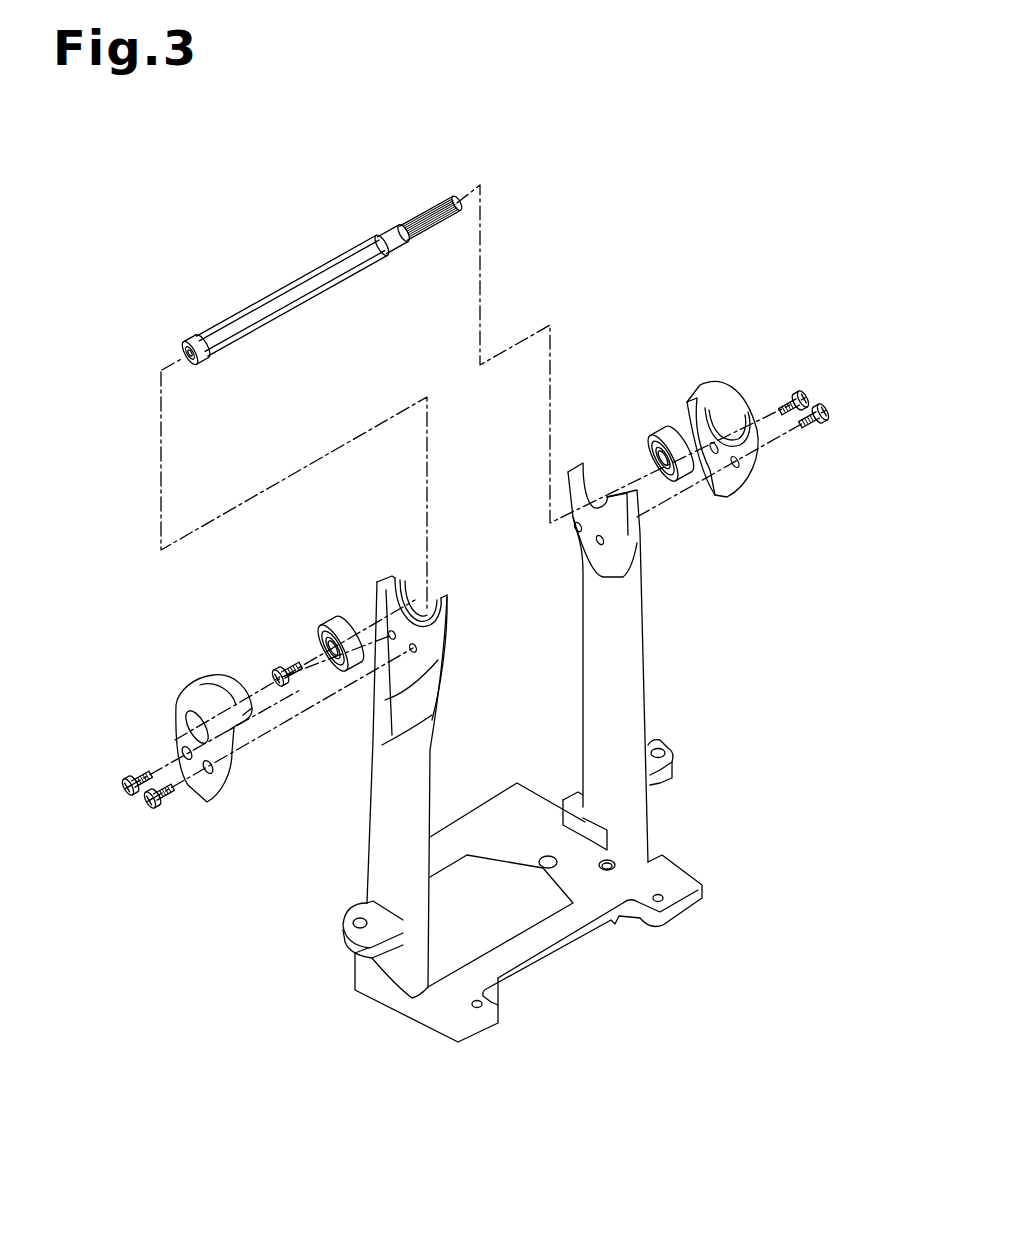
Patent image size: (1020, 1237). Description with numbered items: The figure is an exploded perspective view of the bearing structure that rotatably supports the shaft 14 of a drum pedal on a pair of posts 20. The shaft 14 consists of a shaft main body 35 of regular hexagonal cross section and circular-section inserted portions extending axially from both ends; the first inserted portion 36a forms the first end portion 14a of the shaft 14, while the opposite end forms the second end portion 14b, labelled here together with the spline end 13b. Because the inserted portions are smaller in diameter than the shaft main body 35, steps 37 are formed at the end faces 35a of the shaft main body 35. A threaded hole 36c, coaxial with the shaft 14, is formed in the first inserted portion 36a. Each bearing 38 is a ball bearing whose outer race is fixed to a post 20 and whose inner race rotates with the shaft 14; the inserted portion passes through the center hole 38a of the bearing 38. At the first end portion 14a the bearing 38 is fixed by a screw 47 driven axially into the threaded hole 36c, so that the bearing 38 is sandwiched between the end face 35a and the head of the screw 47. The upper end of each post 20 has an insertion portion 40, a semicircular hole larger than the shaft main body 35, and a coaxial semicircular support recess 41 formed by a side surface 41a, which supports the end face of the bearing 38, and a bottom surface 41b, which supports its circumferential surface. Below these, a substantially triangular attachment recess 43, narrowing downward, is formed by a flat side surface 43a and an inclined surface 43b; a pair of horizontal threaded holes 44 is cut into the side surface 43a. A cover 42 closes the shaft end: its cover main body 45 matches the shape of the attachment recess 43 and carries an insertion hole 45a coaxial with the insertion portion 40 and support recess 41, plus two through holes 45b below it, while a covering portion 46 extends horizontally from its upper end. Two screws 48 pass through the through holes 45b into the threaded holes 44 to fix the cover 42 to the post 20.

The shaft 14 is at (305, 276).
The spline end portion of shaft 13b is at (432, 218).
The second end portion 14b is at (432, 218).
The first end portion 14a is at (196, 349).
The first inserted portion 36a is at (196, 349).
The shaft main body 35 is at (294, 294).
The end face 35a is at (196, 349).
The step 37 is at (394, 238).
The threaded hole 36c is at (190, 352).
The bearing 38 is at (543, 511).
The center hole 38a is at (642, 452).
The post 20 is at (493, 752).
The insertion portion 40 is at (415, 590).
The support recess 41 is at (381, 552).
The side surface 41a is at (444, 596).
The bottom surface 41b is at (386, 579).
The cover 42 is at (432, 588).
The attachment recess 43 is at (472, 671).
The side surface 43a is at (428, 668).
The inclined surface 43b is at (517, 648).
The threaded hole 44 is at (412, 652).
The cover main body 45 is at (215, 790).
The insertion hole 45a is at (185, 727).
The through hole 45b is at (183, 755).
The covering portion 46 is at (210, 677).
The screw 47 is at (274, 668).
The screw 48 is at (130, 800).